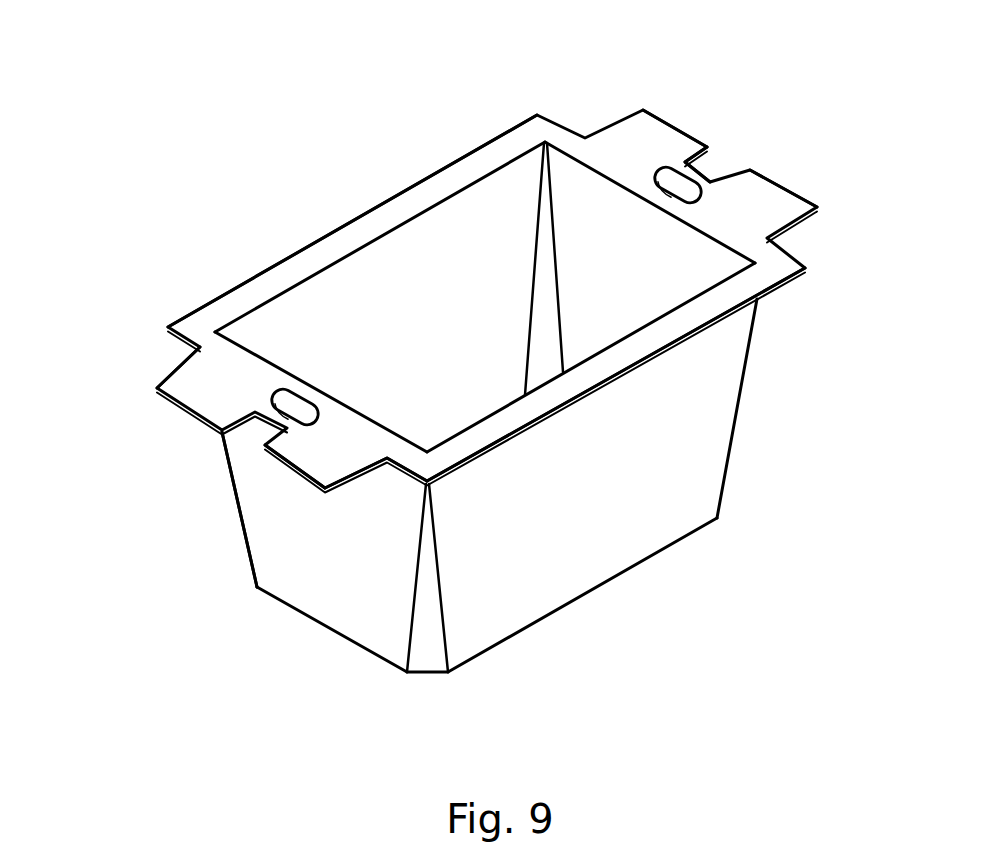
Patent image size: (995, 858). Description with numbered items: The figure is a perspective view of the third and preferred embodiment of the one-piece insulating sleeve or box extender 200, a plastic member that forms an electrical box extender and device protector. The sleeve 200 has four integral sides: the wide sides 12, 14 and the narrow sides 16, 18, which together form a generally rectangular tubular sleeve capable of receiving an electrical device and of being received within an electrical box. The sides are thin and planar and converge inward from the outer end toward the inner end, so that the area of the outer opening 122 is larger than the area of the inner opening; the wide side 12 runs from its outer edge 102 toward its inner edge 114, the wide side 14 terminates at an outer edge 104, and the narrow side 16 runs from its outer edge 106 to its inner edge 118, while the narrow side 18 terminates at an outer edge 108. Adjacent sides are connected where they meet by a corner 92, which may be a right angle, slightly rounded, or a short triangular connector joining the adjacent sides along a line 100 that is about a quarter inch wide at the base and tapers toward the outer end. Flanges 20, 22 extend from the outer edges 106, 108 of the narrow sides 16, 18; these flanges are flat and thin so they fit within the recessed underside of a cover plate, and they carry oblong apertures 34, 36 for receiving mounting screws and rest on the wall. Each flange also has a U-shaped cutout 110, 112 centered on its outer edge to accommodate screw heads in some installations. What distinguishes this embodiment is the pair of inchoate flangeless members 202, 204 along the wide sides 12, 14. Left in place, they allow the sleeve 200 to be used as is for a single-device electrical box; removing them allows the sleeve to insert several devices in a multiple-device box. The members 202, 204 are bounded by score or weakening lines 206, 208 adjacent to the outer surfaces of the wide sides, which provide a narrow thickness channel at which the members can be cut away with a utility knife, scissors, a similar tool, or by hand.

The sleeve or box extender 200 is at (310, 97).
The wide side 12 is at (579, 477).
The wide side 14 is at (485, 285).
The narrow side 16 is at (289, 542).
The narrow side 18 is at (632, 257).
The flange 20 is at (319, 478).
The flange 22 is at (735, 229).
The aperture 34 is at (290, 395).
The aperture 36 is at (678, 190).
The corner 92 is at (528, 371).
The line 100 is at (533, 264).
The outer edge 102 is at (590, 358).
The outer edge 104 is at (358, 245).
The outer edge 106 is at (245, 355).
The outer edge 108 is at (597, 175).
The U-shaped cutout 110 is at (252, 430).
The U-shaped cutout 112 is at (708, 163).
The inner edge 114 is at (583, 597).
The inner edge 118 is at (332, 630).
The outer opening 122 is at (442, 264).
The inchoate flangeless member 202 is at (690, 317).
The inchoate flangeless member 204 is at (272, 283).
The score or weakening line 206 is at (400, 472).
The score or weakening line 208 is at (185, 347).